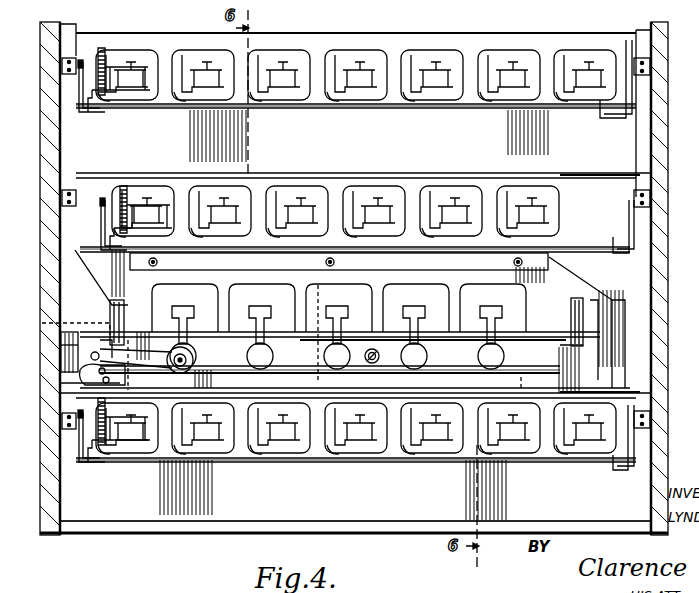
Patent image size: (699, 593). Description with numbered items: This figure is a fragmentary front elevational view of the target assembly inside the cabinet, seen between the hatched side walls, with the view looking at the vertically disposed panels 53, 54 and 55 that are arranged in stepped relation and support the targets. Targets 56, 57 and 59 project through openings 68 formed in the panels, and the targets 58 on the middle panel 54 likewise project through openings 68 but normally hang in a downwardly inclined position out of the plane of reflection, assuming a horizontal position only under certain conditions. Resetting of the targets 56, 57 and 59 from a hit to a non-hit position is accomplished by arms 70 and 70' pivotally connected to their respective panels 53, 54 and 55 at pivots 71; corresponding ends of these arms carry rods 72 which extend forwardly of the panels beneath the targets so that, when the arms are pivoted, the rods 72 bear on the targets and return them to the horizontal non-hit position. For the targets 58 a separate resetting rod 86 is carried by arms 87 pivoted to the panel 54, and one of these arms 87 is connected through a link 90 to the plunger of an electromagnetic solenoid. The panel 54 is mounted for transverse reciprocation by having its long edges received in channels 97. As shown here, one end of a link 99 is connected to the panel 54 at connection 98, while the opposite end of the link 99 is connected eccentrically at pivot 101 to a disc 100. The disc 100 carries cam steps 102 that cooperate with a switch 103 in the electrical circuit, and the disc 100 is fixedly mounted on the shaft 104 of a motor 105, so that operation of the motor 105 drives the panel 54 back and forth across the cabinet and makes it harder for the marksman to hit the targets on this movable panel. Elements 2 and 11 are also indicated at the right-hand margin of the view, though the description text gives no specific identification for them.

The housing 2 is at (669, 127).
The side wall 11 is at (675, 300).
The panel 53 is at (594, 151).
The panel 54 is at (528, 289).
The panel 55 is at (636, 478).
The target 56 is at (112, 62).
The target 57 is at (163, 197).
The target 58 is at (194, 359).
The target 59 is at (143, 416).
The opening 68 is at (208, 55).
The arm 70 is at (355, 267).
The arm 70' is at (656, 326).
The pivot 71 is at (67, 68).
The rod 72 is at (445, 113).
The resetting rod 86 is at (528, 338).
The arm 87 is at (118, 320).
The link 90 is at (573, 318).
The channel 97 is at (559, 175).
The connection 98 is at (272, 373).
The link 99 is at (197, 371).
The disc 100 is at (102, 377).
The eccentric connection 101 is at (97, 352).
The cam step 102 is at (100, 315).
The switch 103 is at (60, 343).
The shaft 104 is at (60, 384).
The motor 105 is at (58, 320).